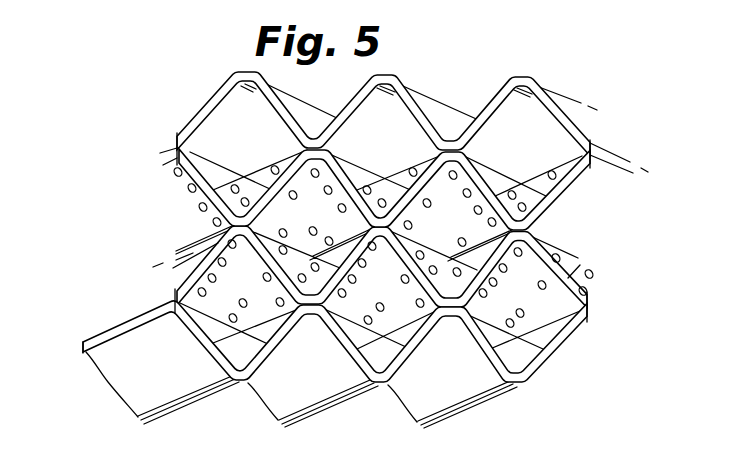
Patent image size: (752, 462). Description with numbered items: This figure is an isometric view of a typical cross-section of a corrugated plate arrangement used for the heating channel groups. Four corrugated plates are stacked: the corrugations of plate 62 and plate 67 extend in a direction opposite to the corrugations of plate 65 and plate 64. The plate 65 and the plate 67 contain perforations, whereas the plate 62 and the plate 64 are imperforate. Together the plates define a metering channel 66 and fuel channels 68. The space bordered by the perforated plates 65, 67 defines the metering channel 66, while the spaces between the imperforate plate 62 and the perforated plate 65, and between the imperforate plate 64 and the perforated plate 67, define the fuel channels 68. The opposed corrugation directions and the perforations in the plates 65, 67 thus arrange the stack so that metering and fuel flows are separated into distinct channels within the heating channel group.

The imperforate plate 62 is at (213, 103).
The imperforate plate 64 is at (98, 334).
The perforated plate 65 is at (193, 188).
The metering channel 66 is at (464, 224).
The perforated plate 67 is at (173, 268).
The fuel channel 68 is at (529, 299).